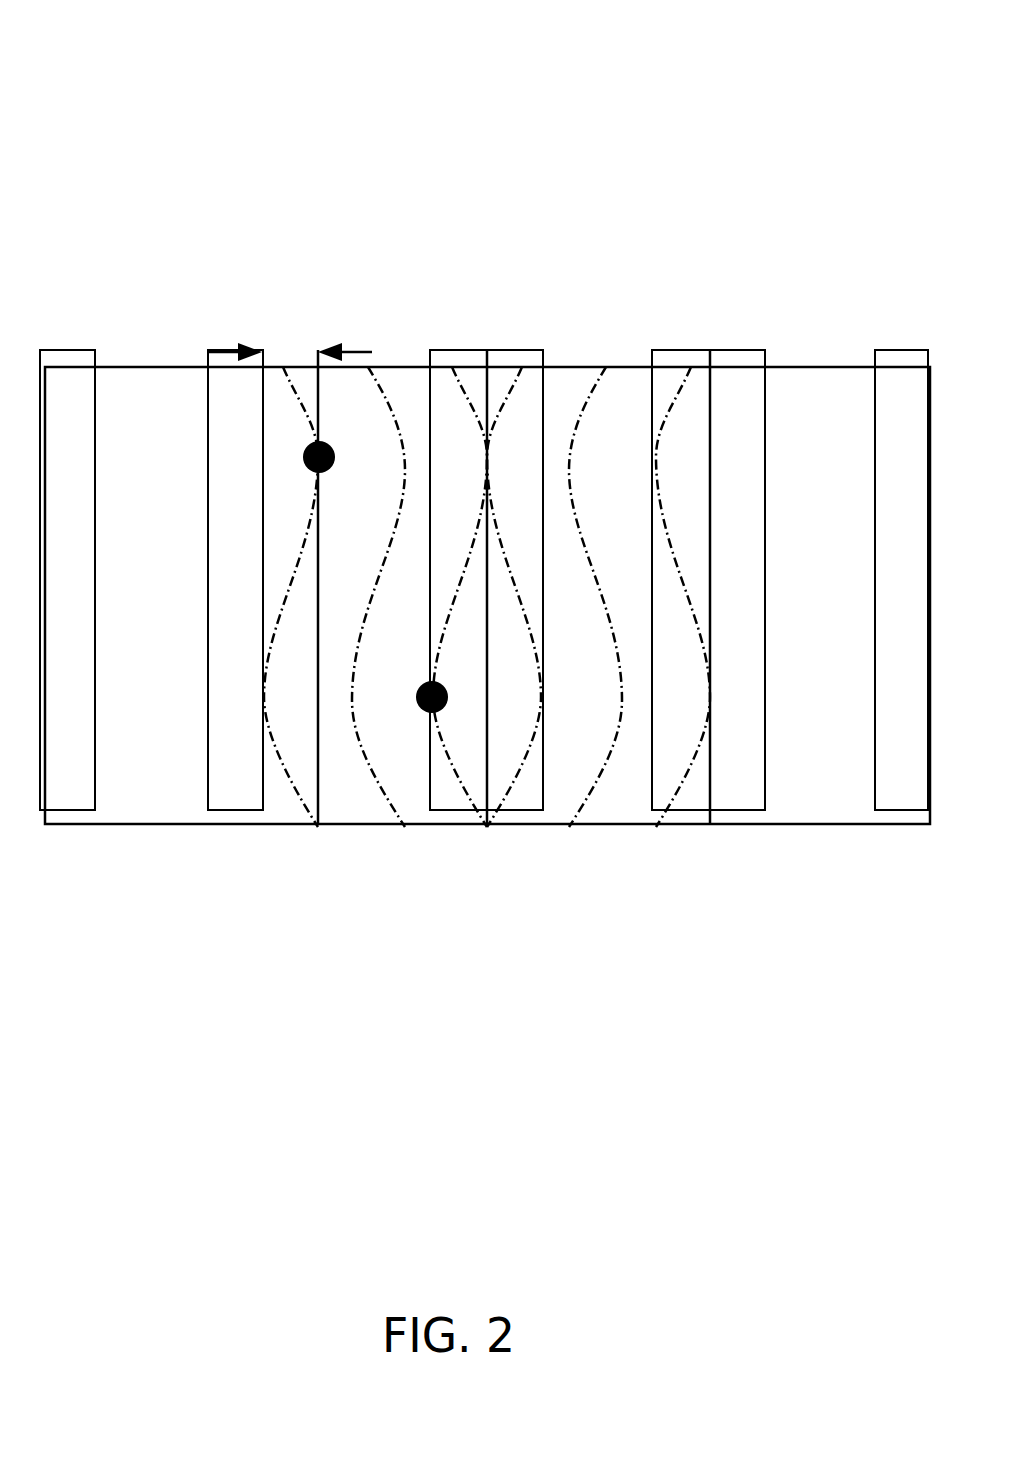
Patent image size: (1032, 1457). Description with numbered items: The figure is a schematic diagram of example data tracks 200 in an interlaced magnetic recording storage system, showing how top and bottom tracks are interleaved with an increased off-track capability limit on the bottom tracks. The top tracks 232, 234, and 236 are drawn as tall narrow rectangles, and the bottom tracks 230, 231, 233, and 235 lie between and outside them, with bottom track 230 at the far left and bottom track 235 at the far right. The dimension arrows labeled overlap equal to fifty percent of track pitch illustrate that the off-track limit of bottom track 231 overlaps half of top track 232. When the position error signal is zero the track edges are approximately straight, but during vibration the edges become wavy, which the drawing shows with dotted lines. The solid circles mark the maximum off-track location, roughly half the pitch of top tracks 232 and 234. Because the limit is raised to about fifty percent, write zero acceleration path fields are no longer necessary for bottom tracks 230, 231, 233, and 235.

The data tracks 200 is at (118, 58).
The bottom track 230 is at (105, 580).
The bottom track 231 is at (378, 597).
The top track 232 is at (244, 580).
The bottom track 233 is at (595, 597).
The top track 234 is at (486, 580).
The bottom track 235 is at (864, 580).
The top track 236 is at (708, 580).